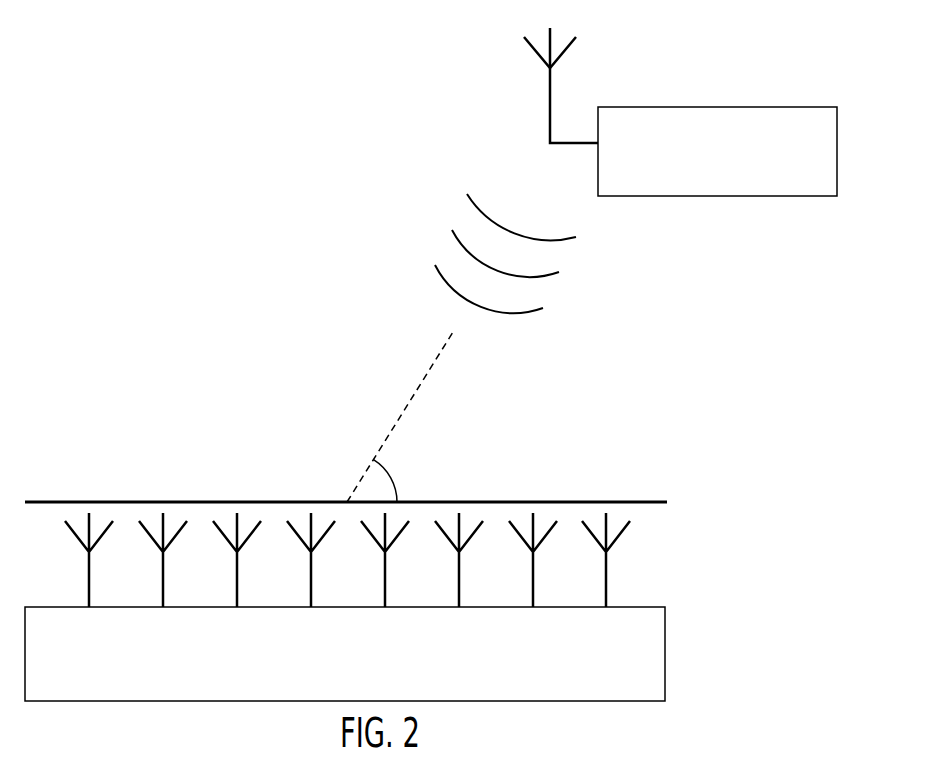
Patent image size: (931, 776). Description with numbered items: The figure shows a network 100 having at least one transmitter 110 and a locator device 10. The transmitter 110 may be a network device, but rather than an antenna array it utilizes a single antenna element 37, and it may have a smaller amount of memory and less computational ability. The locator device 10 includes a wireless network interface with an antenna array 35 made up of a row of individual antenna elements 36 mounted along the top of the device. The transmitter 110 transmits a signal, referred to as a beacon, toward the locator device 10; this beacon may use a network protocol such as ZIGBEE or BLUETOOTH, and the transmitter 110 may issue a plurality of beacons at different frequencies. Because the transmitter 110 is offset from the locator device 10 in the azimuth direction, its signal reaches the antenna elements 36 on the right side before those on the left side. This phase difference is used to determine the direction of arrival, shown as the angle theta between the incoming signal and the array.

The network 100 is at (118, 236).
The transmitter 110 is at (837, 157).
The single antenna element 37 is at (553, 95).
The antenna array 35 is at (373, 560).
The antenna elements 36 is at (89, 590).
The locator device 10 is at (665, 655).